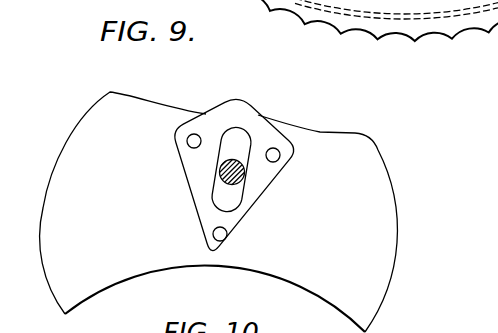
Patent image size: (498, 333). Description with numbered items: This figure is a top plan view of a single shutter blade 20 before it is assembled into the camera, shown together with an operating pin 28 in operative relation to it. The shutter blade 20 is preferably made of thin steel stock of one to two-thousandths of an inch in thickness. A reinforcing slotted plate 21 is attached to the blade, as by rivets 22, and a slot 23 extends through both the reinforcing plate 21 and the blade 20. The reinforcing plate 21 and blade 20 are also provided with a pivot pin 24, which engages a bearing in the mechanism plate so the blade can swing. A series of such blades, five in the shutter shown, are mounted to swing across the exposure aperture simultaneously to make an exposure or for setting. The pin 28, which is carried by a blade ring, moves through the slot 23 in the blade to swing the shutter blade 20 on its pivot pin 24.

The shutter blade 20 is at (219, 212).
The reinforcing slotted plate 21 is at (249, 119).
The rivets 22 is at (193, 134).
The slot 23 is at (236, 197).
The pivot pin 24 is at (219, 241).
The pin 28 is at (219, 172).